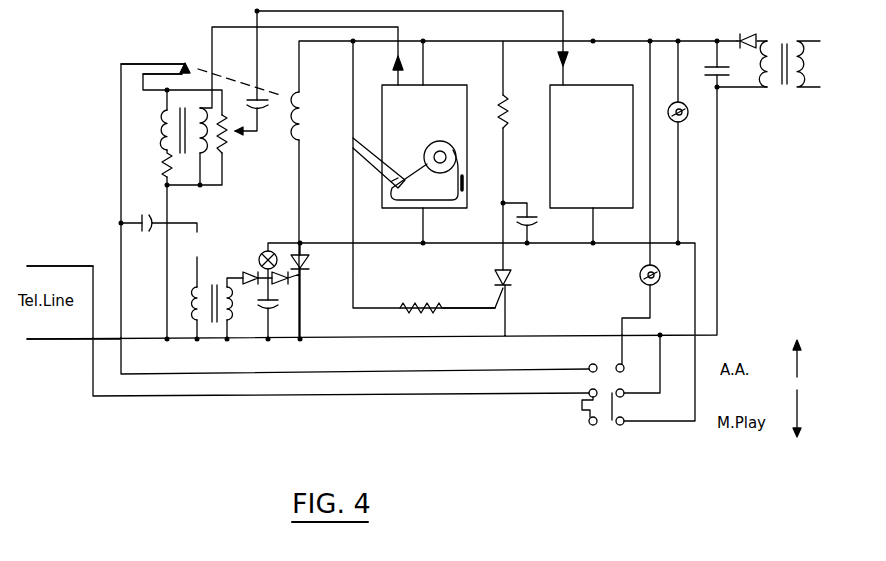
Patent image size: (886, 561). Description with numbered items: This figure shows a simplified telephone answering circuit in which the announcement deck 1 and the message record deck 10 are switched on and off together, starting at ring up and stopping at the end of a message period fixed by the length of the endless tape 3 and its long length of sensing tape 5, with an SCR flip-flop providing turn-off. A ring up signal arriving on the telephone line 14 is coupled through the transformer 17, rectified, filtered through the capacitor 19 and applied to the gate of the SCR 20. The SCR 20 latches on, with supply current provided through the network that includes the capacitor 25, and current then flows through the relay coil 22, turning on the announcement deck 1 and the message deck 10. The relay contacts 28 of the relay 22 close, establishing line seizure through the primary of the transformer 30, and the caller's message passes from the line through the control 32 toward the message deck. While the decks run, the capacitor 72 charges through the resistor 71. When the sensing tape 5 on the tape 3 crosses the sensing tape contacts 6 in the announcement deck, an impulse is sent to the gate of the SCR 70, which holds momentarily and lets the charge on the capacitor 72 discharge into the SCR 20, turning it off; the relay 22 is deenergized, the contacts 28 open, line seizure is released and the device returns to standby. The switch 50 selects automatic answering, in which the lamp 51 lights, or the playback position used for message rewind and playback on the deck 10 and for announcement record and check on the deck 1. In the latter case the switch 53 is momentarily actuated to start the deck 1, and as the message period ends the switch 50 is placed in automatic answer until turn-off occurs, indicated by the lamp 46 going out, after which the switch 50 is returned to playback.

The announcement deck 1 is at (446, 86).
The endless tape 3 is at (424, 160).
The long length of sensing tape 5 is at (465, 180).
The sensing tape contacts 6 is at (393, 178).
The message record deck 10 is at (604, 86).
The telephone line 14 is at (73, 302).
The transformer 17 is at (215, 282).
The capacitor 19 is at (279, 327).
The SCR 20 is at (310, 258).
The relay coil 22 is at (305, 117).
The capacitor 25 is at (757, 57).
The relay contacts 28 is at (192, 63).
The transformer 30 is at (162, 136).
The control 32 is at (229, 140).
The lamp 46 is at (692, 112).
The switch 50 is at (592, 430).
The lamp 51 is at (677, 280).
The switch 53 is at (262, 251).
The SCR 70 is at (520, 276).
The resistor 71 is at (508, 118).
The capacitor 72 is at (540, 230).